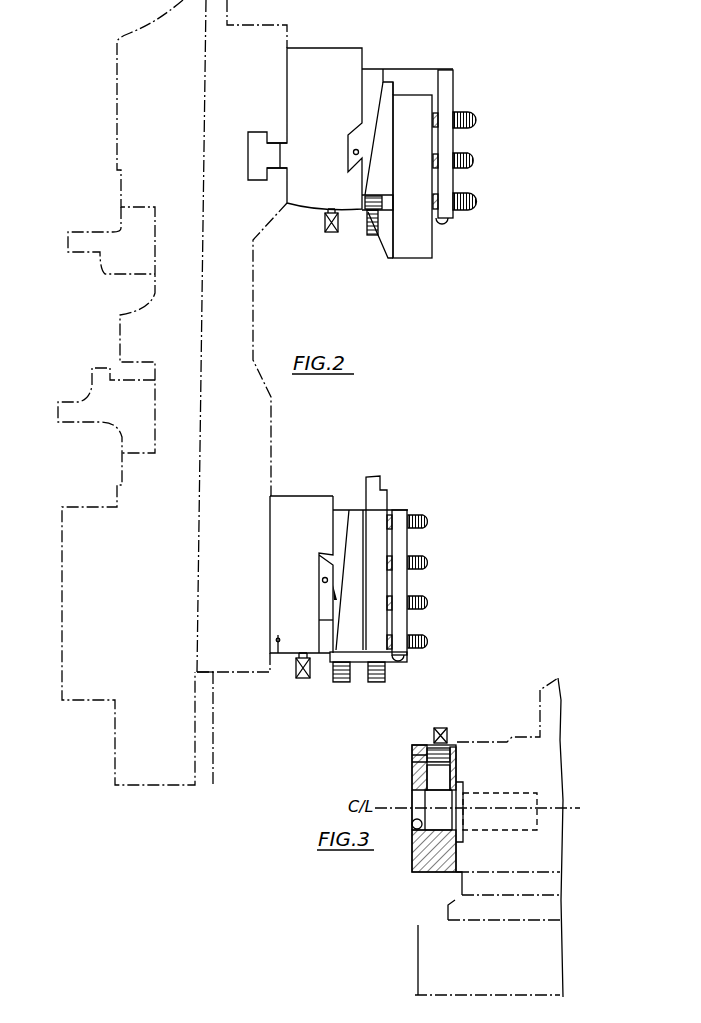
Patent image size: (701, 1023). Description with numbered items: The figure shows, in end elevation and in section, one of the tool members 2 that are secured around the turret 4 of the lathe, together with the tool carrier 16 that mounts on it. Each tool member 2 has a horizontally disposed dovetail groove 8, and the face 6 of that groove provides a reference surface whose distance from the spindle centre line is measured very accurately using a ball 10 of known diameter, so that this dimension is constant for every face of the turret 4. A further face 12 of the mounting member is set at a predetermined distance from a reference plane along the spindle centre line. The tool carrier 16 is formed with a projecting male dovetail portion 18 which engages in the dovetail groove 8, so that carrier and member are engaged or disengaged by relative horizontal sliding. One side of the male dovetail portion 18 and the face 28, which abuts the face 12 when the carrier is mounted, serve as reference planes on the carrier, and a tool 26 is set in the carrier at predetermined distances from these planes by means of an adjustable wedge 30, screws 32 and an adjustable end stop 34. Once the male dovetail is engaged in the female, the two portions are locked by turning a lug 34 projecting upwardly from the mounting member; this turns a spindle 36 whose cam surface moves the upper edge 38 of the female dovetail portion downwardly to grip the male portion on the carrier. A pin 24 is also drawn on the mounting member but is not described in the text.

In FIG. 2, the tool member 2 is at (318, 68).
In FIG. 3, the tool member 2 is at (443, 862).
In FIG. 3, the turret 4 is at (477, 837).
In FIG. 2, the face 6 is at (326, 551).
In FIG. 3, the face 6 is at (418, 836).
In FIG. 3, the dovetail groove 8 is at (413, 794).
In FIG. 3, the ball 10 is at (412, 824).
In FIG. 2, the face 12 is at (327, 623).
In FIG. 3, the face 12 is at (425, 856).
In FIG. 2, the tool carrier 16 is at (408, 66).
In FIG. 2, the male dovetail portion 18 is at (384, 186).
In FIG. 2, the pivot pin 24 is at (353, 152).
In FIG. 2, the tool 26 is at (431, 258).
In FIG. 2, the face 28 is at (341, 682).
In FIG. 2, the adjustable wedge 30 is at (389, 259).
In FIG. 2, the screws 32 is at (470, 195).
In FIG. 2, the lug 34 is at (332, 233).
In FIG. 3, the lug 34 is at (446, 737).
In FIG. 3, the spindle 36 is at (458, 748).
In FIG. 3, the upper edge 38 is at (413, 777).